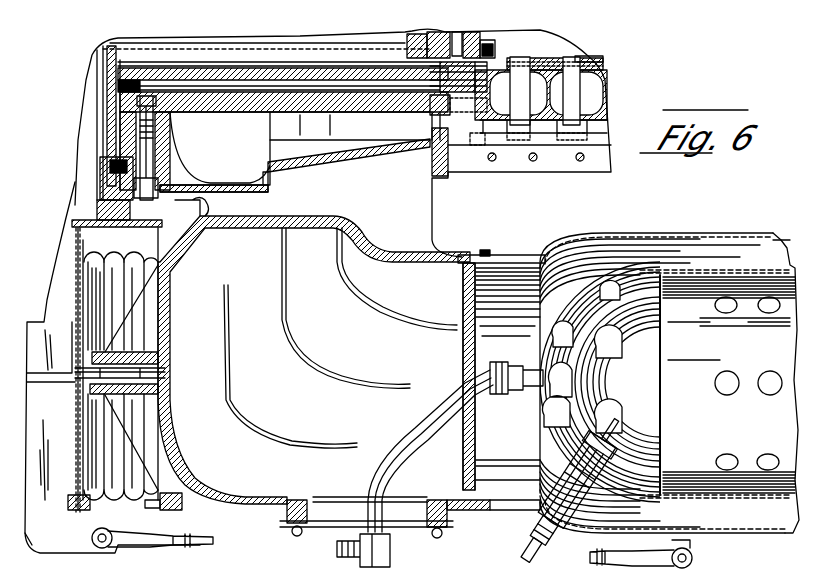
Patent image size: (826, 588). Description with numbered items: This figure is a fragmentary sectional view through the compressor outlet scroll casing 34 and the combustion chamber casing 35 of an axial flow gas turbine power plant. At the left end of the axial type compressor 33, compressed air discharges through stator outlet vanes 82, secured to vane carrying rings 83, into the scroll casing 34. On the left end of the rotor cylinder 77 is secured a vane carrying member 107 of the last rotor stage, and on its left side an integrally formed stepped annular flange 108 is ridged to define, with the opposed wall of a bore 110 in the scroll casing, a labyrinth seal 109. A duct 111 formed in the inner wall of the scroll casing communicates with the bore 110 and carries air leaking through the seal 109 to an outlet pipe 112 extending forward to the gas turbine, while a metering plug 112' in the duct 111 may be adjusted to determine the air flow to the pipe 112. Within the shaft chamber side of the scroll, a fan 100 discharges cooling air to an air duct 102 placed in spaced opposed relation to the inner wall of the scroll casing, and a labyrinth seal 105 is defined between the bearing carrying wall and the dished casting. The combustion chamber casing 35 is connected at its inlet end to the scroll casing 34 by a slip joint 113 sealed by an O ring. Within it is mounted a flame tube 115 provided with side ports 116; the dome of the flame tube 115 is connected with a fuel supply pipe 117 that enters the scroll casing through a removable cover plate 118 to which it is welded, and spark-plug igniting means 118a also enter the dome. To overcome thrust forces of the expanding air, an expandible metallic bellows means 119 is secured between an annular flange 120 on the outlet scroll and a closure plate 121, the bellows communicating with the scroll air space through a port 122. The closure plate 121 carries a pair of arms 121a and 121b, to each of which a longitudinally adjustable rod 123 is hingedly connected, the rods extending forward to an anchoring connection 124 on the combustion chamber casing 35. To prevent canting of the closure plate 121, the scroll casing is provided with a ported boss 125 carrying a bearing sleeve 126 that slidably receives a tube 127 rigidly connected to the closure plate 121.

The air duct 102 is at (258, 57).
The fan 100 is at (430, 47).
The labyrinth seal 105 is at (455, 45).
The labyrinth seal 109 is at (505, 60).
The vane carrying member 107 is at (570, 63).
The rotor cylinder 77 is at (588, 56).
The metering plug 112' is at (91, 94).
The duct 111 is at (228, 90).
The bore 110 is at (385, 108).
The compressor outlet scroll casing 34 is at (337, 155).
The stator outlet vanes 82 is at (432, 150).
The vane carrying rings 83 is at (450, 152).
The stepped annular flange 108 is at (510, 140).
The axial type compressor 33 is at (605, 157).
The outlet pipe 112 is at (163, 155).
The slip joint 113 is at (501, 268).
The flame tube 115 is at (583, 298).
The side ports 116 is at (748, 342).
The arm 121a is at (47, 327).
The port 122 is at (168, 320).
The ported boss 125 is at (118, 356).
The tube 127 is at (150, 376).
The bearing sleeve 126 is at (90, 410).
The closure plate 121 is at (75, 460).
The expandible metallic bellows means 119 is at (103, 506).
The annular flange 120 is at (183, 500).
The fuel supply pipe 117 is at (400, 433).
The removable cover plate 118 is at (425, 535).
The spark-plug igniting means 118a is at (520, 545).
The longitudinally adjustable rod 123 is at (210, 545).
The anchoring connection 124 is at (692, 548).
The combustion chamber casing 35 is at (760, 545).
The arm 121b is at (50, 555).